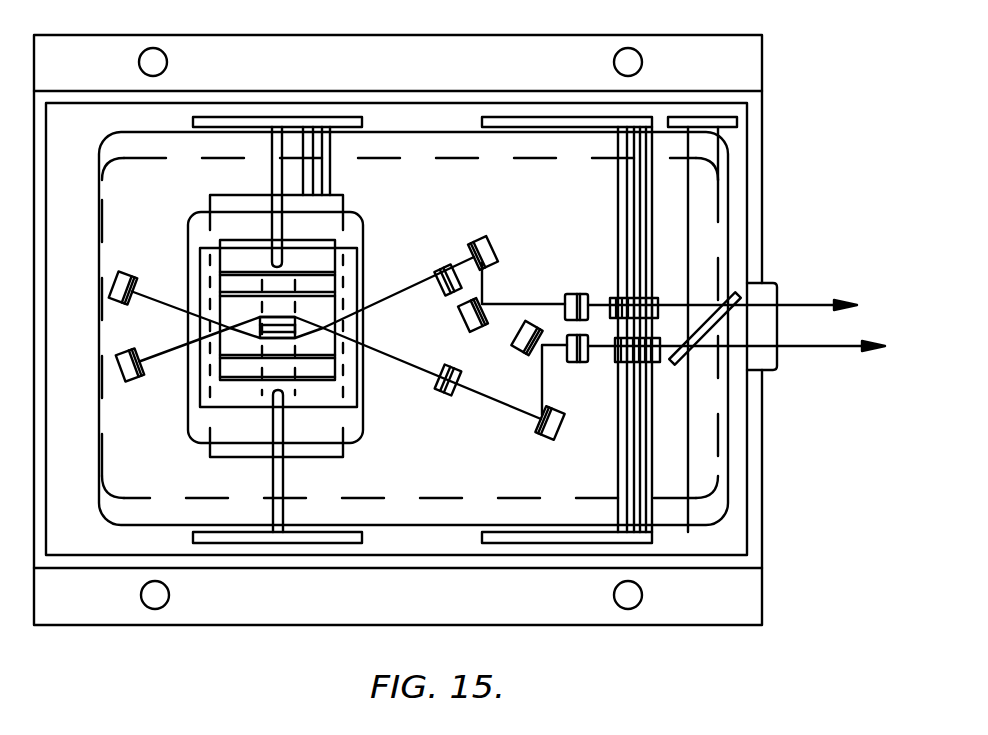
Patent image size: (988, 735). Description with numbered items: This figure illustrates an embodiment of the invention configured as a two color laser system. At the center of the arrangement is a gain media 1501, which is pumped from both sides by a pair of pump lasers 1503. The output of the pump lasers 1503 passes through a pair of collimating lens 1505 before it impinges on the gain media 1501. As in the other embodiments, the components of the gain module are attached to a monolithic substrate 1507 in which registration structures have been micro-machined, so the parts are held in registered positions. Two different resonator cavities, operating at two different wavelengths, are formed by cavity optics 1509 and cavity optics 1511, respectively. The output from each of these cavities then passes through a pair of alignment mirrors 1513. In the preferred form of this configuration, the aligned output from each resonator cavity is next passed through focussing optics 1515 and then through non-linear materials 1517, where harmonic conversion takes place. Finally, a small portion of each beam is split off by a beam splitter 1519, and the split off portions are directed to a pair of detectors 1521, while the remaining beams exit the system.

The gain media 1501 is at (232, 330).
The pump lasers 1503 is at (337, 268).
The collimating lens 1505 is at (337, 292).
The monolithic substrate 1507 is at (193, 222).
The cavity optics 1509 is at (143, 376).
The cavity optics 1511 is at (135, 273).
The alignment mirrors 1513 is at (485, 303).
The focussing optics 1515 is at (572, 291).
The non-linear materials 1517 is at (662, 298).
The beam splitter 1519 is at (680, 360).
The detectors 1521 is at (725, 117).